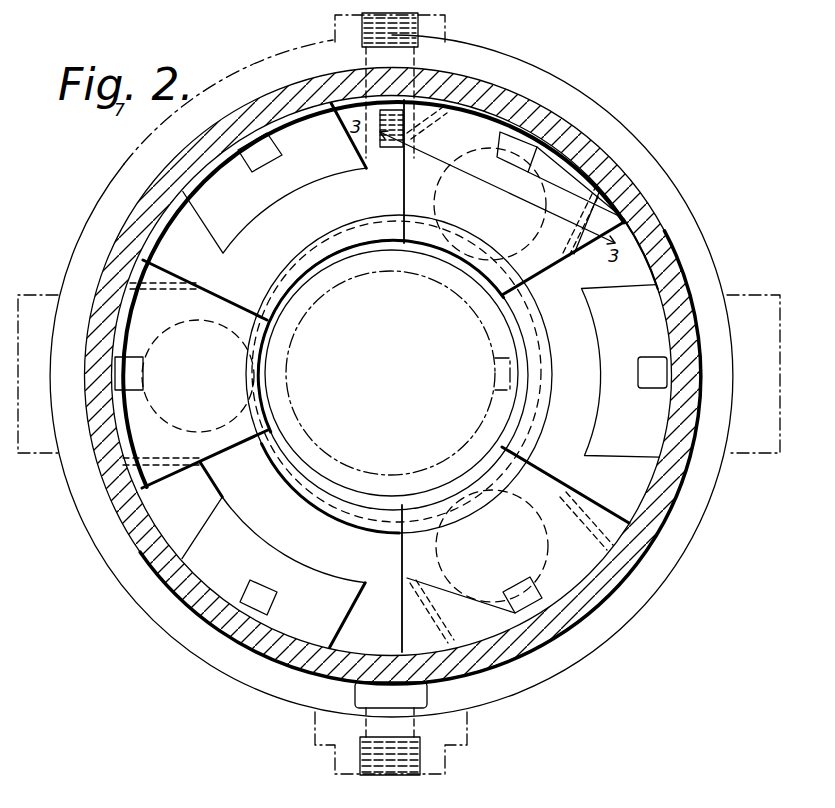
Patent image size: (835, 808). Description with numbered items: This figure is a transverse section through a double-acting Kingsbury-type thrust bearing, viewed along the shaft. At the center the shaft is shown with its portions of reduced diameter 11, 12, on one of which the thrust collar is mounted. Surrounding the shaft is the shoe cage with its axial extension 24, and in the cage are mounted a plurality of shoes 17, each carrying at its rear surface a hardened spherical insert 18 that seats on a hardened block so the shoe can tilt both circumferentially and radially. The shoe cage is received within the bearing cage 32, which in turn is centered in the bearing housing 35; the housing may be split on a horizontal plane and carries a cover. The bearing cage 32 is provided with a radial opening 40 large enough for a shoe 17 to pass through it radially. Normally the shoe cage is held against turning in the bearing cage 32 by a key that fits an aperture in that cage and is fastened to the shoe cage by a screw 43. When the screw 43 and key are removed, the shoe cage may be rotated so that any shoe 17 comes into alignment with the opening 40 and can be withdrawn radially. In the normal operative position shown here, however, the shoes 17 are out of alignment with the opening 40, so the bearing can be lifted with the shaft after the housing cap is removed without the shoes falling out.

The portion of reduced diameter 11 is at (387, 256).
The portion of reduced diameter 12 is at (408, 381).
The shoe 17 is at (407, 184).
The hardened spherical insert 18 is at (406, 201).
The axial extension 24 is at (344, 229).
The bearing cage 32 is at (486, 95).
The bearing housing 35 is at (617, 138).
The radial opening 40 is at (145, 205).
The screw 43 is at (400, 92).